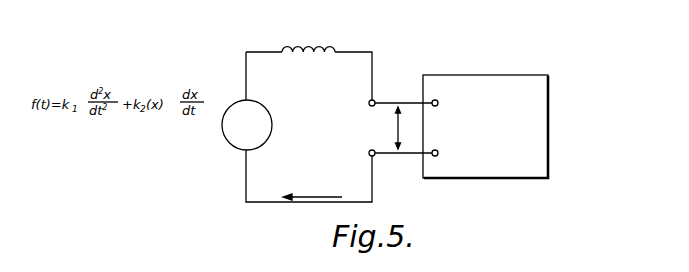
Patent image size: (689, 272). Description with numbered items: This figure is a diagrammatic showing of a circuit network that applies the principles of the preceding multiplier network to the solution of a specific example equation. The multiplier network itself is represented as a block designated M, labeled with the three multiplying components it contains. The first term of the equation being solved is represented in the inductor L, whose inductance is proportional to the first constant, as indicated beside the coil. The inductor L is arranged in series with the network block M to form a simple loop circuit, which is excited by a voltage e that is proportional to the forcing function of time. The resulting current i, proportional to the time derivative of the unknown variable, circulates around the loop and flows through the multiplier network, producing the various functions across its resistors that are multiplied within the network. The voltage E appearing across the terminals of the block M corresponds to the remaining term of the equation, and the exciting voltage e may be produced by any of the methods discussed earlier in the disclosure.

The inductor L is at (308, 62).
The exciting voltage e is at (247, 125).
The network voltage E is at (388, 128).
The multiplier network block M is at (485, 126).
The loop current i is at (332, 187).